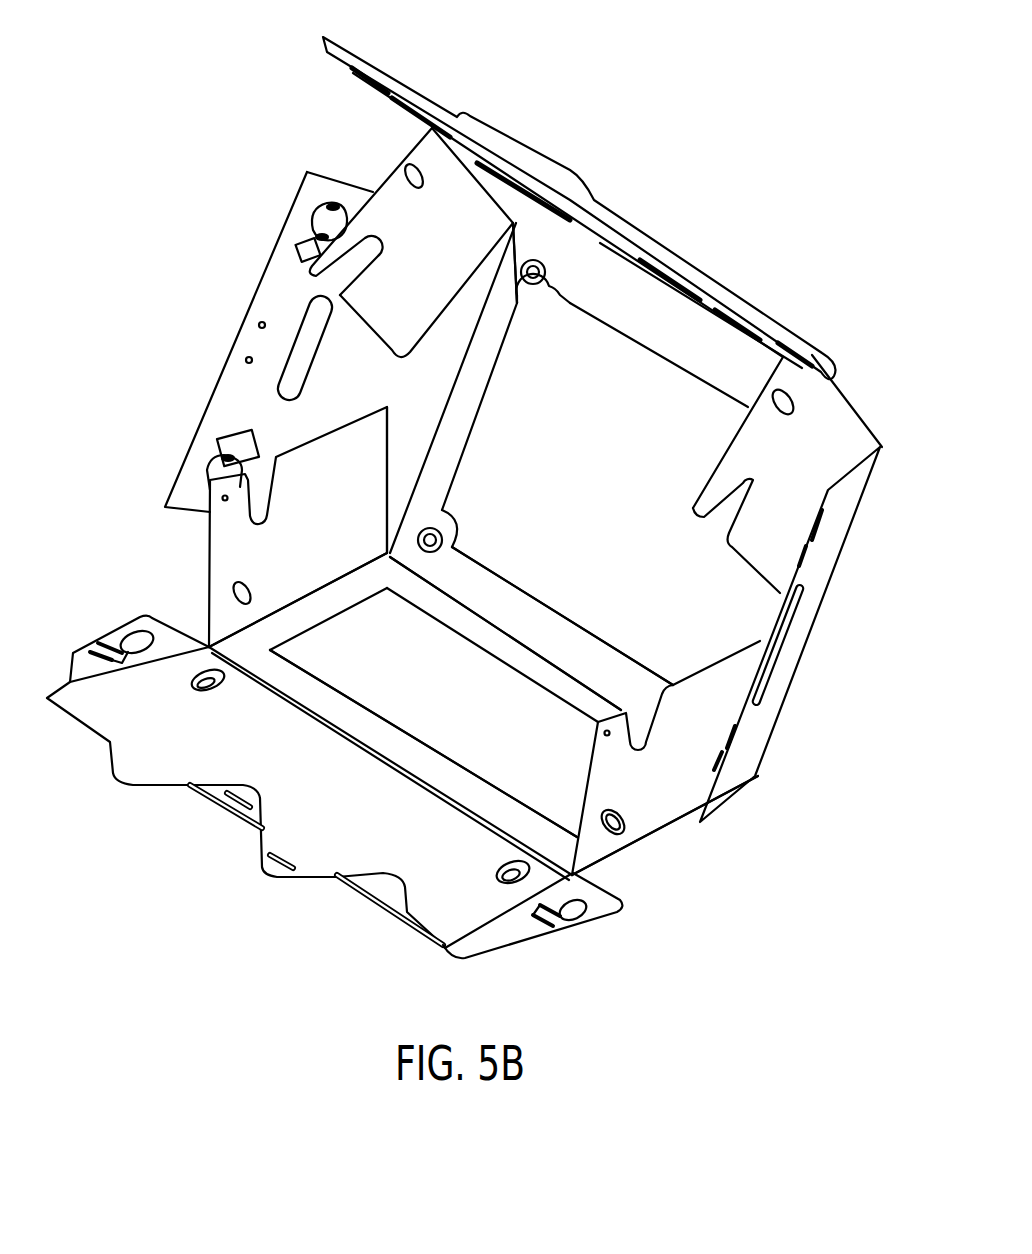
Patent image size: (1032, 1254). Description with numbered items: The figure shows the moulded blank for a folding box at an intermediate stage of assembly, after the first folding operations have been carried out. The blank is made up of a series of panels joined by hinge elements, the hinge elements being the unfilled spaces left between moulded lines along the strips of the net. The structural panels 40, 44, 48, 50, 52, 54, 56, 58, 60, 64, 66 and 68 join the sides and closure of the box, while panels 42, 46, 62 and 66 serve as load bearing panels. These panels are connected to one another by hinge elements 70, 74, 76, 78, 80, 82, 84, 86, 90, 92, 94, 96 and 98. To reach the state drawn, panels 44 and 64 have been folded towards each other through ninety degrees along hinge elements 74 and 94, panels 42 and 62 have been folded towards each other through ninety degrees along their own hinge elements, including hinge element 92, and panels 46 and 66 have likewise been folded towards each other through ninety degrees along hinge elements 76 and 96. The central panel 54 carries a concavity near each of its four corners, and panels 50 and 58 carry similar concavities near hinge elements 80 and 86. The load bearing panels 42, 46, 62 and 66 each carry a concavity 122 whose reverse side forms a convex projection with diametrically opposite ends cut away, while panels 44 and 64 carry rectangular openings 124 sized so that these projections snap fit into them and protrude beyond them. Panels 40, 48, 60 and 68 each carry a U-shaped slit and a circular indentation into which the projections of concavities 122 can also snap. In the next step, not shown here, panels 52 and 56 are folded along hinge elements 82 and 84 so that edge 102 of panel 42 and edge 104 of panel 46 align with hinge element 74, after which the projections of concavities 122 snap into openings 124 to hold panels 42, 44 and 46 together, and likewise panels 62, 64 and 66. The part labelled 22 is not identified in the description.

The top flange plate 22 is at (470, 176).
The panel 40 is at (350, 78).
The panel 42 is at (429, 260).
The panel 44 is at (363, 386).
The panel 46 is at (327, 540).
The panel 48 is at (113, 692).
The panel 50 is at (641, 237).
The panel 52 is at (647, 282).
The panel 54 is at (596, 479).
The panel 56 is at (464, 701).
The panel 58 is at (343, 811).
The panel 60 is at (818, 353).
The panel 62 is at (801, 489).
The panel 64 is at (800, 614).
The panel 66 is at (672, 784).
The panel 68 is at (545, 947).
The hinge element 70 is at (400, 97).
The hinge element 74 is at (445, 395).
The hinge element 76 is at (302, 602).
The hinge element 78 is at (135, 683).
The hinge element 80 is at (690, 292).
The hinge element 82 is at (667, 318).
The hinge element 84 is at (525, 637).
The hinge element 86 is at (420, 745).
The hinge element 90 is at (742, 298).
The hinge element 92 is at (835, 397).
The hinge element 94 is at (857, 520).
The hinge element 96 is at (660, 825).
The hinge element 98 is at (507, 912).
The edge 102 is at (448, 300).
The edge 104 is at (385, 482).
The concavity 122 is at (405, 162).
The rectangular opening 124 is at (312, 218).